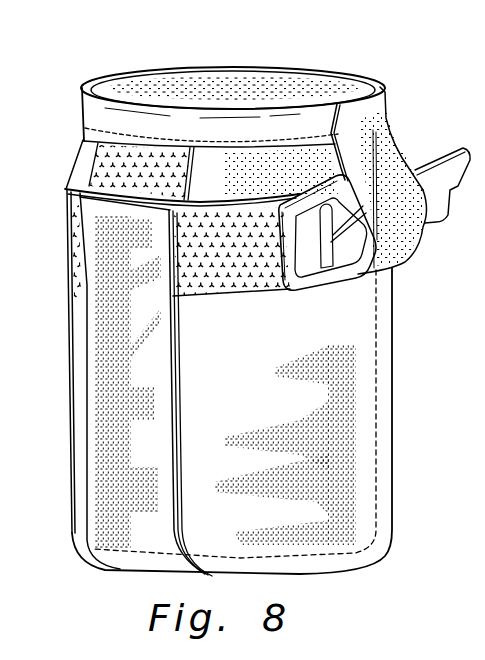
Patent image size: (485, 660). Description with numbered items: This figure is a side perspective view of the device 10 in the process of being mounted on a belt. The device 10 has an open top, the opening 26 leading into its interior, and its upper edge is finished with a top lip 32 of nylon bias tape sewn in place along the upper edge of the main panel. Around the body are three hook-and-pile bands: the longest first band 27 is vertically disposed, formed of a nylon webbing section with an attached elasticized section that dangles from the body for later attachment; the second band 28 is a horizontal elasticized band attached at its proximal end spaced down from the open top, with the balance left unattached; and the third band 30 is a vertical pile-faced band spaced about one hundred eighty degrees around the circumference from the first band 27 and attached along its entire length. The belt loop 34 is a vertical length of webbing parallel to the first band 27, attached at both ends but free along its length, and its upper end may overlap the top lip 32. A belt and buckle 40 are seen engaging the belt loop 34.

The device 10 is at (234, 42).
The opening 26 is at (203, 84).
The first band 27 is at (177, 498).
The second band 28 is at (323, 280).
The third band 30 is at (80, 144).
The top lip 32 is at (341, 77).
The belt loop 34 is at (408, 250).
The belt and buckle 40 is at (432, 171).